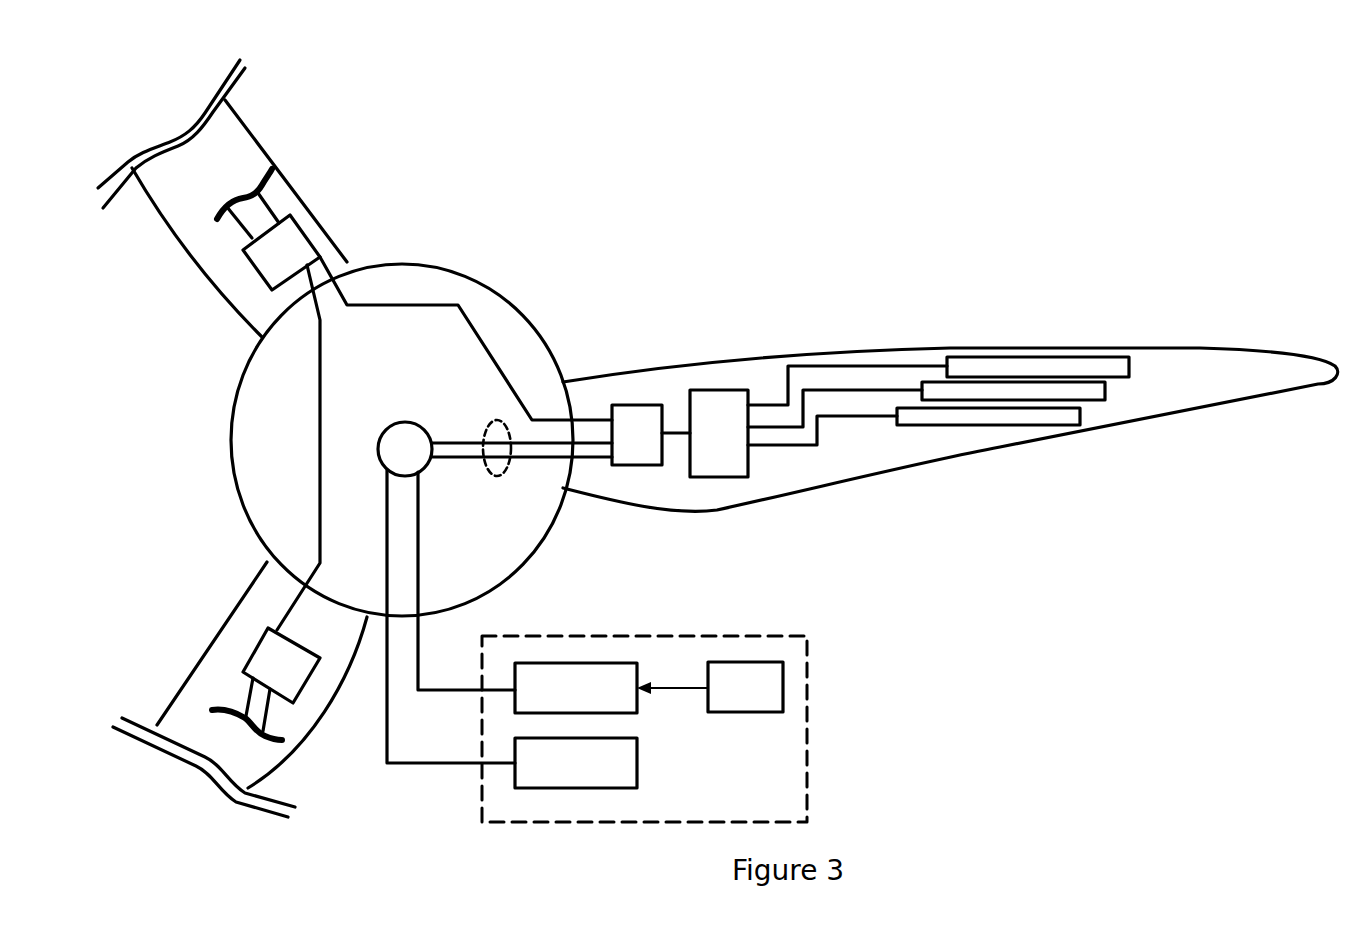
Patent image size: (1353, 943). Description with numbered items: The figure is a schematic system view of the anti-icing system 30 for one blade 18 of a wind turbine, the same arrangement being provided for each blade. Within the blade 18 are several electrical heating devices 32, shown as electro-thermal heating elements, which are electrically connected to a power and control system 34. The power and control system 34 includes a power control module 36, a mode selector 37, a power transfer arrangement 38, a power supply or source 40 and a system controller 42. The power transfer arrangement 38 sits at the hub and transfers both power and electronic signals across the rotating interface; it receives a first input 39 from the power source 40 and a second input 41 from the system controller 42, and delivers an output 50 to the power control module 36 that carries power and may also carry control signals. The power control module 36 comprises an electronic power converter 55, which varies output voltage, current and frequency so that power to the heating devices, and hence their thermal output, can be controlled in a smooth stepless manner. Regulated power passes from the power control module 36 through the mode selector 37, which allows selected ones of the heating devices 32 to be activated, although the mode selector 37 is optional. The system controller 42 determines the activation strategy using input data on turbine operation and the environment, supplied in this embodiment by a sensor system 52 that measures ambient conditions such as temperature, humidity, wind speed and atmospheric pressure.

The blade 18 is at (1205, 412).
The anti-icing system 30 is at (510, 126).
The electrical heating devices 32 is at (923, 413).
The power and control system 34 is at (618, 297).
The power control module 36 is at (634, 385).
The mode selector 37 is at (301, 218).
The power transfer arrangement 38 is at (383, 436).
The first input 39 is at (385, 524).
The power supply or source 40 is at (637, 763).
The second input 41 is at (420, 545).
The system controller 42 is at (580, 662).
The output 50 is at (502, 471).
The sensor system 52 is at (783, 688).
The electronic power converter 55 is at (630, 455).